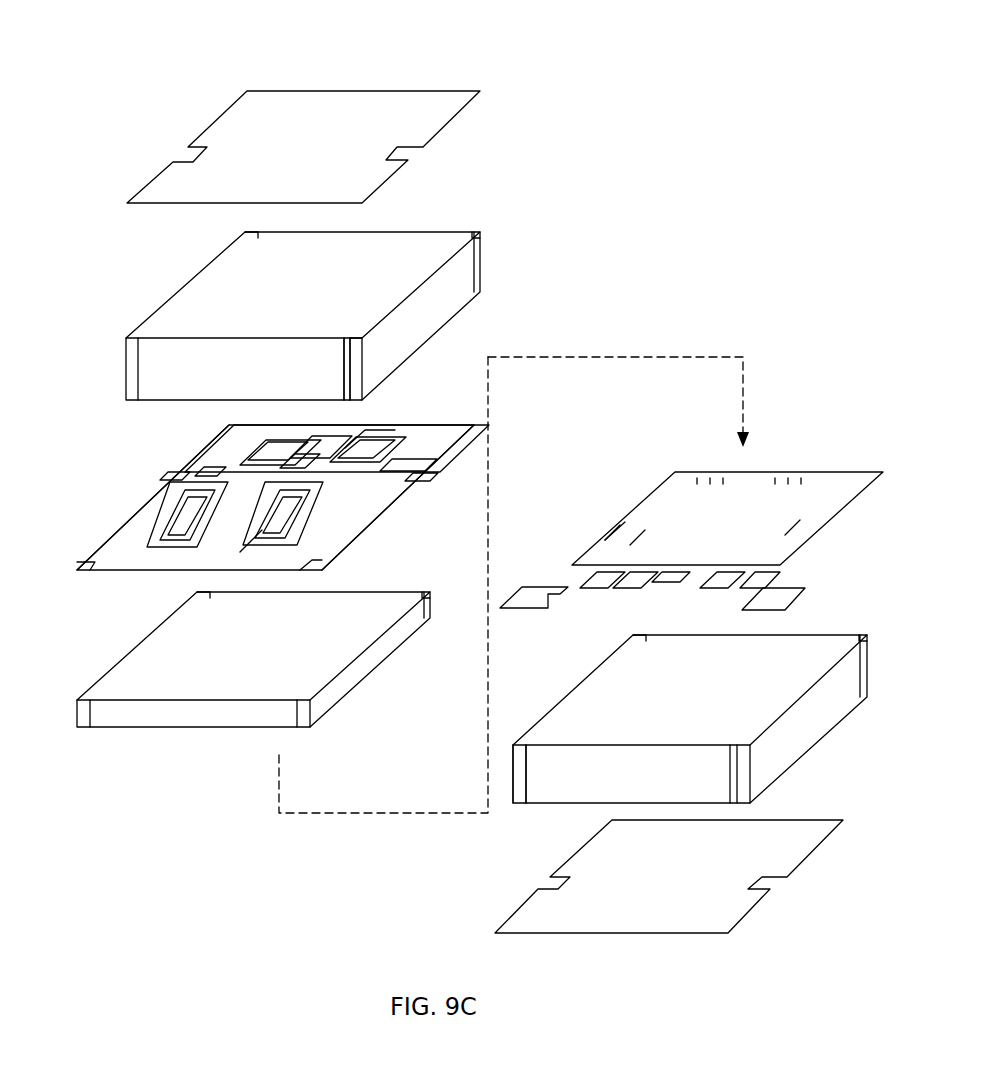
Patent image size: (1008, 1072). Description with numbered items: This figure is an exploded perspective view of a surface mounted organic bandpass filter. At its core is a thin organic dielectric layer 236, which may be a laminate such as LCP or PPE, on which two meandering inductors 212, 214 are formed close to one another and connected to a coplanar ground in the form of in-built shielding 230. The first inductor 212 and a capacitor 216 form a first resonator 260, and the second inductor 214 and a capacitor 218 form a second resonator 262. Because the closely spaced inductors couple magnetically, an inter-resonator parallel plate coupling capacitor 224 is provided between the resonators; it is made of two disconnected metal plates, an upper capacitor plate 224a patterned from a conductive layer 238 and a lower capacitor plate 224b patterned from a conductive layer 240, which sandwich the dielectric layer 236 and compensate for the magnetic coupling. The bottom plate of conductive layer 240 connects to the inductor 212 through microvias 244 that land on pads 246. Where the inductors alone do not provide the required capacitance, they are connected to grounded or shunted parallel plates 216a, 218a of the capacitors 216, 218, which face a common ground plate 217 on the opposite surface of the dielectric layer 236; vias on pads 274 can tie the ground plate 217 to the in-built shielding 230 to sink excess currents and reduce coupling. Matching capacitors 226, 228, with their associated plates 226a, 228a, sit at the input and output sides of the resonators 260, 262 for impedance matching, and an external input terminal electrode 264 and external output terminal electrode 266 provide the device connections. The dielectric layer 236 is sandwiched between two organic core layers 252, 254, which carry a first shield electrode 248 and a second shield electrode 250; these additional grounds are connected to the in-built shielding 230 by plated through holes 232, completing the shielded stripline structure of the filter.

The inductor 212 is at (185, 515).
The inductor 214 is at (340, 512).
The capacitor 216 is at (235, 437).
The grounded/shunted parallel plate 216a is at (304, 455).
The ground plate 217 is at (772, 507).
The capacitor 218 is at (440, 440).
The grounded/shunted parallel plate 218a is at (367, 428).
The inter-resonator parallel plate coupling capacitor 224 is at (265, 500).
The capacitor plate 224a is at (300, 468).
The capacitor plate 224b is at (665, 578).
The parallel plate/interdigital capacitor 226 is at (215, 468).
The contact pad 226a is at (525, 605).
The parallel plate/interdigital capacitor 228 is at (400, 464).
The contact pad 228a is at (787, 592).
The in-built shielding 230 is at (262, 440).
The plated through holes 232 is at (355, 367).
The organic dielectric layer 236 is at (355, 668).
The patterning conductive layer 238 is at (472, 430).
The patterned conductive layer 240 is at (805, 425).
The vias 244 is at (588, 520).
The pads 246 is at (630, 522).
The first shield electrode 248 is at (393, 103).
The second shield electrode 250 is at (790, 830).
The organic core layer 252 is at (440, 310).
The organic core layer 254 is at (798, 728).
The first resonator 260 is at (145, 562).
The second resonator 262 is at (262, 570).
The external input terminal electrode 264 is at (185, 474).
The external output terminal electrode 266 is at (425, 482).
The pads 274 is at (735, 572).